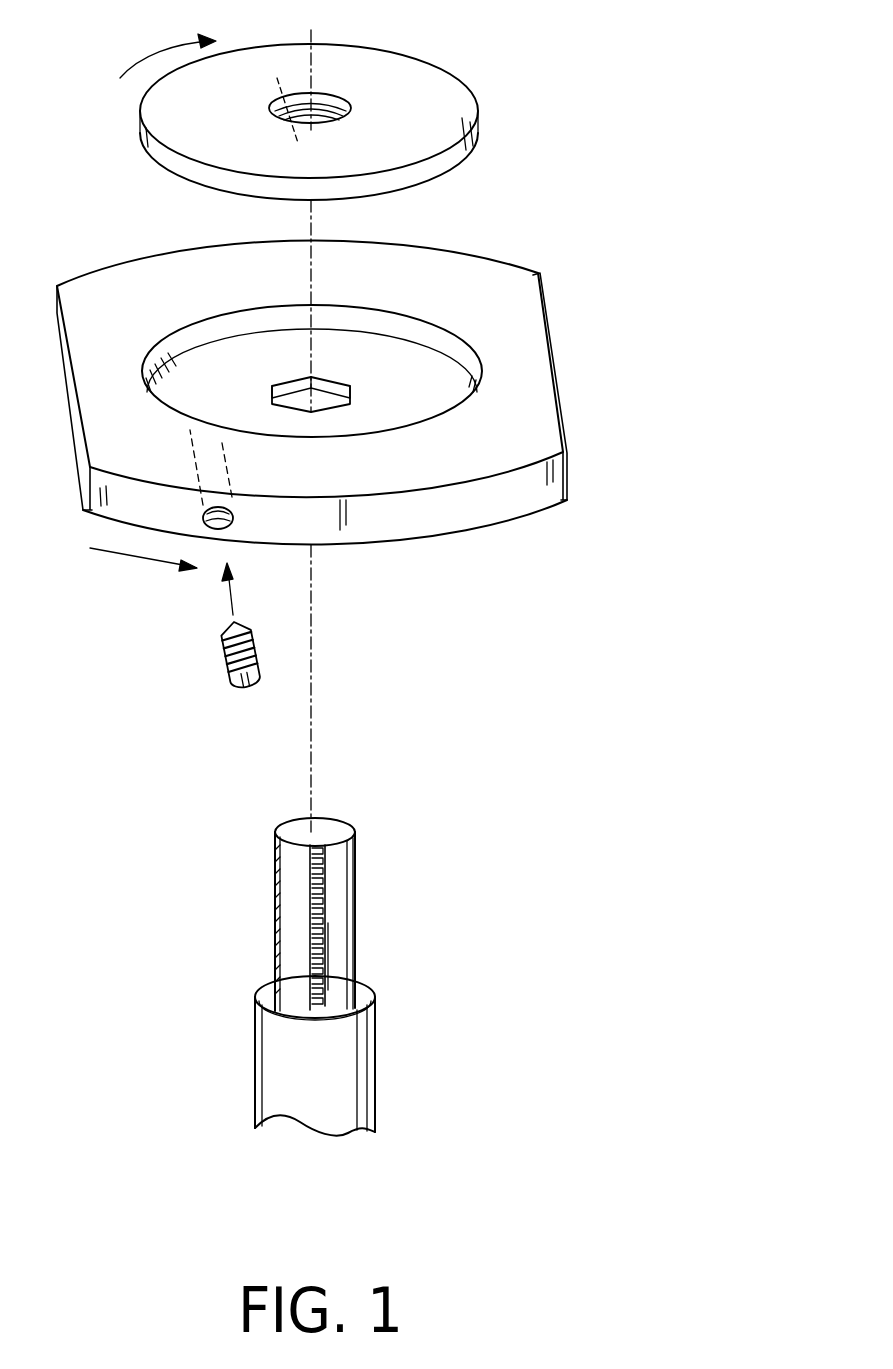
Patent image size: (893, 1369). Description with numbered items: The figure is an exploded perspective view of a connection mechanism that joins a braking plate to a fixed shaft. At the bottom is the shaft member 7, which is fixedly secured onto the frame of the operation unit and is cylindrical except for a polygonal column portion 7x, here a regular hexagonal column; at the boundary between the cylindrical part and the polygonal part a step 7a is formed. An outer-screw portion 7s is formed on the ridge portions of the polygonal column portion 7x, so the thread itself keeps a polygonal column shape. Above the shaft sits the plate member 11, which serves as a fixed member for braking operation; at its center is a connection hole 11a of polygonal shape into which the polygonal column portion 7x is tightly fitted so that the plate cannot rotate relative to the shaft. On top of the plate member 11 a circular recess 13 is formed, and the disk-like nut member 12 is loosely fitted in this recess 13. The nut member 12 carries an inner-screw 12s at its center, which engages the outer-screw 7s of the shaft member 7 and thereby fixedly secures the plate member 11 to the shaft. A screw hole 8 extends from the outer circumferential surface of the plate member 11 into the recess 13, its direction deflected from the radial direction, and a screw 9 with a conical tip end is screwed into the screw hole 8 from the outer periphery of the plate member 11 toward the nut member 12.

The shaft member 7 is at (238, 1068).
The step 7a is at (362, 992).
The polygonal column portion 7x is at (298, 955).
The outer-screw portion 7s is at (307, 882).
The screw hole 8 is at (177, 478).
The screw 9 is at (227, 656).
The plate member 11 is at (112, 288).
The connection hole 11a is at (338, 387).
The nut member 12 is at (175, 156).
The inner-screw 12s is at (327, 96).
The recess 13 is at (177, 343).